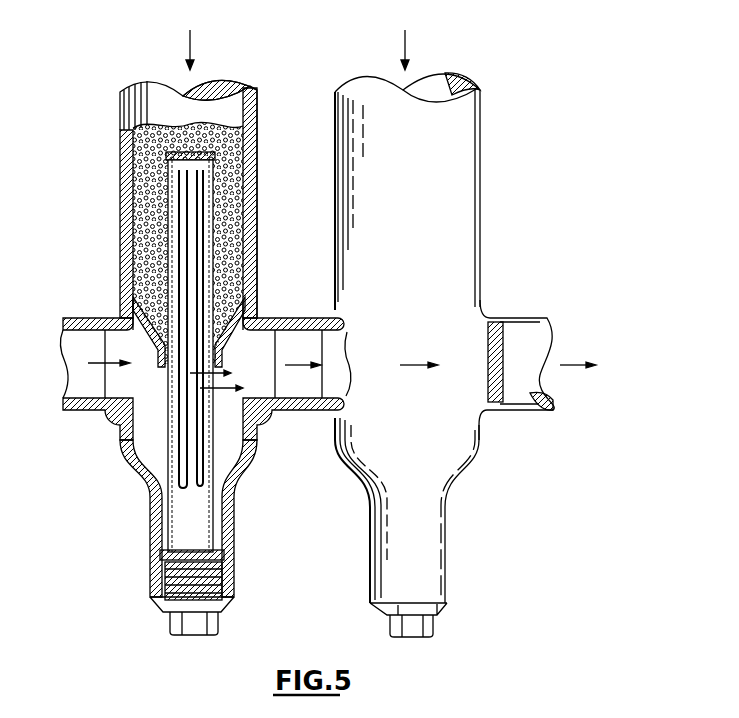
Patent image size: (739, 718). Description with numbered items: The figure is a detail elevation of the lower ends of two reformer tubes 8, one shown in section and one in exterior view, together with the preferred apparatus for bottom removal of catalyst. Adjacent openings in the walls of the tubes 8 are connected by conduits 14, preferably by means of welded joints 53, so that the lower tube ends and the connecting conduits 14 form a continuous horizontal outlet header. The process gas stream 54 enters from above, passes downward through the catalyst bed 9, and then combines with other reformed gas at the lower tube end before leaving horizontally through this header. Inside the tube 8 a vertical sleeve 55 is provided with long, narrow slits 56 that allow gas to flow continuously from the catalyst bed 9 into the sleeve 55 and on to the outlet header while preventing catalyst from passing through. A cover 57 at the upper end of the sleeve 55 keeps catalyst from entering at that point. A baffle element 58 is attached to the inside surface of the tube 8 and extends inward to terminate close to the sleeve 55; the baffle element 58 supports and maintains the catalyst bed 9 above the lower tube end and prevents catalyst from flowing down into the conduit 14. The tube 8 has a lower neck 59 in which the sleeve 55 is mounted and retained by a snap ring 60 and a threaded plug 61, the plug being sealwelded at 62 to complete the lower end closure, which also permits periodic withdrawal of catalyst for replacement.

The tube 8 is at (260, 100).
The catalyst bed 9 is at (236, 150).
The conduit 14 is at (70, 318).
The welded joint 53 is at (322, 320).
The process gas stream 54 is at (190, 52).
The vertical sleeve 55 is at (212, 420).
The slit 56 is at (179, 492).
The cover 57 is at (198, 152).
The baffle element 58 is at (222, 343).
The lower neck 59 is at (138, 478).
The snap ring 60 is at (165, 566).
The threaded plug 61 is at (170, 622).
The sealweld 62 is at (232, 613).